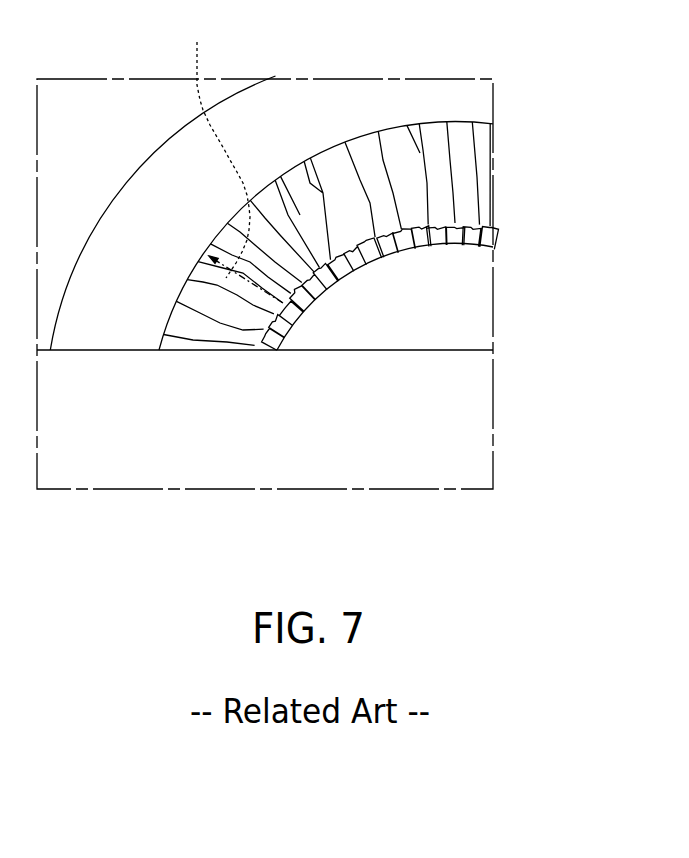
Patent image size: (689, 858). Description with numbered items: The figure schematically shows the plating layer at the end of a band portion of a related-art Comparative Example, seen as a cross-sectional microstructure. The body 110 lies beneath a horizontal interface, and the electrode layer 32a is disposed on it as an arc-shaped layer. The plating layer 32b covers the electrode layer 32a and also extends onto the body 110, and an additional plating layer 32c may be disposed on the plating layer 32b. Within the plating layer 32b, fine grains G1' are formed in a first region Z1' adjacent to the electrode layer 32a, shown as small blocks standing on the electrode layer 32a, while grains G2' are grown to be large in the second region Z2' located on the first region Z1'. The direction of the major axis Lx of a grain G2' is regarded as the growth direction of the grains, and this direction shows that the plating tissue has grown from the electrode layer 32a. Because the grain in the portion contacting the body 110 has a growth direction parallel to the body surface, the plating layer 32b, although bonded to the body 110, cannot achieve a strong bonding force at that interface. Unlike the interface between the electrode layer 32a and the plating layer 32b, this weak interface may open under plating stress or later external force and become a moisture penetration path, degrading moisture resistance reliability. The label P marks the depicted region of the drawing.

The additional plating layer 32c is at (487, 95).
The plating layer 32b is at (371, 236).
The electrode layer 32a is at (487, 305).
The body 110 is at (487, 400).
The grains G2' is at (362, 234).
The fine grains G1' is at (411, 288).
The second region Z2' is at (362, 234).
The first region Z1' is at (411, 284).
The major axis Lx is at (236, 160).
The pixel P is at (273, 570).